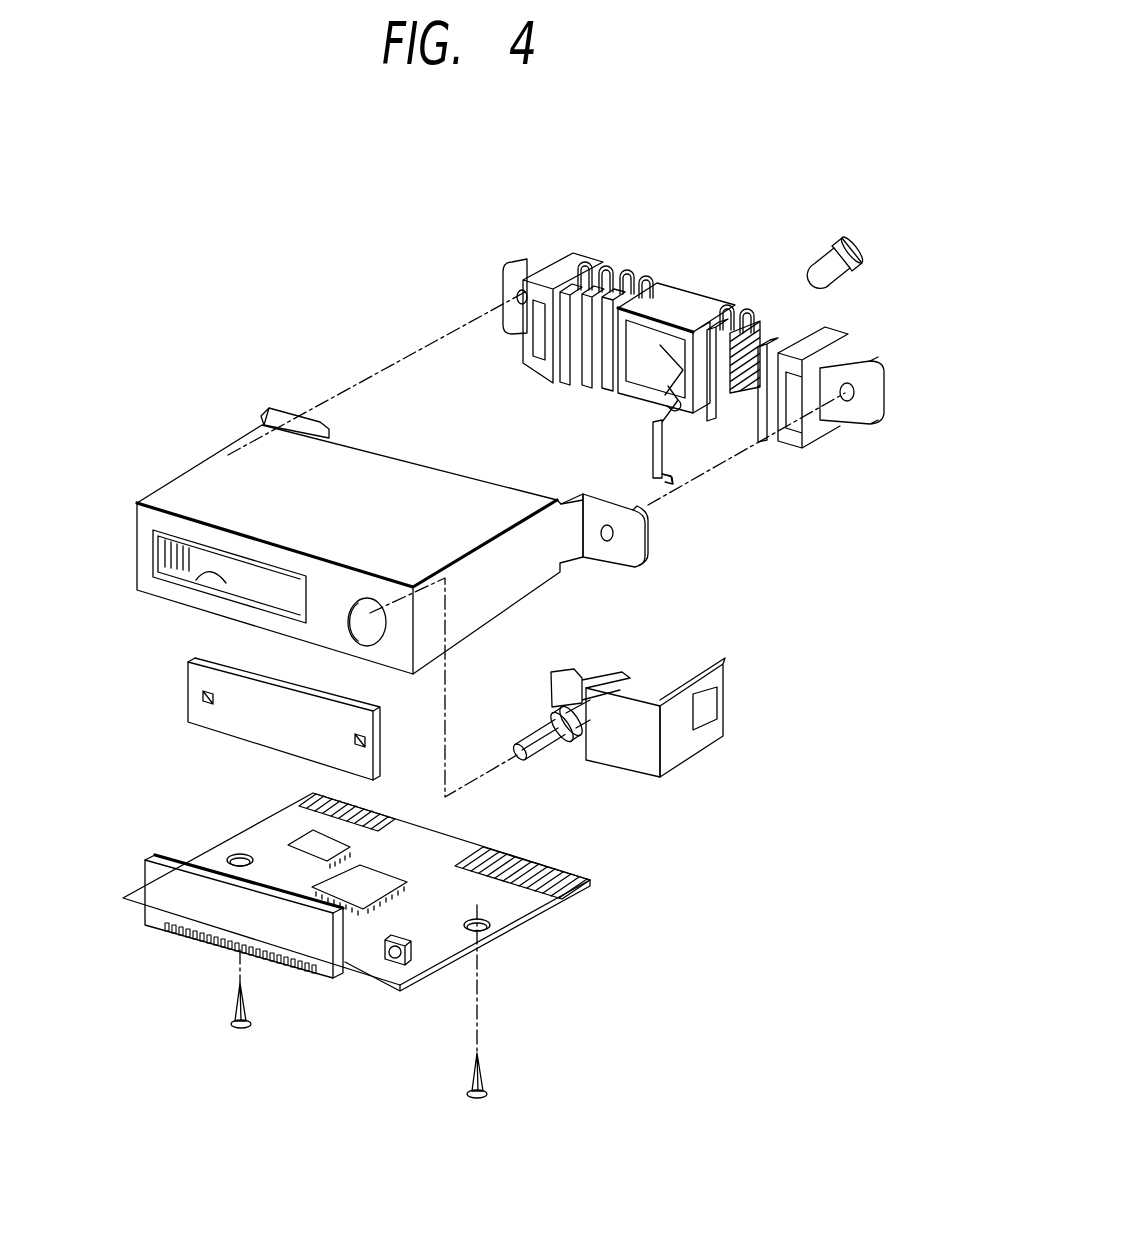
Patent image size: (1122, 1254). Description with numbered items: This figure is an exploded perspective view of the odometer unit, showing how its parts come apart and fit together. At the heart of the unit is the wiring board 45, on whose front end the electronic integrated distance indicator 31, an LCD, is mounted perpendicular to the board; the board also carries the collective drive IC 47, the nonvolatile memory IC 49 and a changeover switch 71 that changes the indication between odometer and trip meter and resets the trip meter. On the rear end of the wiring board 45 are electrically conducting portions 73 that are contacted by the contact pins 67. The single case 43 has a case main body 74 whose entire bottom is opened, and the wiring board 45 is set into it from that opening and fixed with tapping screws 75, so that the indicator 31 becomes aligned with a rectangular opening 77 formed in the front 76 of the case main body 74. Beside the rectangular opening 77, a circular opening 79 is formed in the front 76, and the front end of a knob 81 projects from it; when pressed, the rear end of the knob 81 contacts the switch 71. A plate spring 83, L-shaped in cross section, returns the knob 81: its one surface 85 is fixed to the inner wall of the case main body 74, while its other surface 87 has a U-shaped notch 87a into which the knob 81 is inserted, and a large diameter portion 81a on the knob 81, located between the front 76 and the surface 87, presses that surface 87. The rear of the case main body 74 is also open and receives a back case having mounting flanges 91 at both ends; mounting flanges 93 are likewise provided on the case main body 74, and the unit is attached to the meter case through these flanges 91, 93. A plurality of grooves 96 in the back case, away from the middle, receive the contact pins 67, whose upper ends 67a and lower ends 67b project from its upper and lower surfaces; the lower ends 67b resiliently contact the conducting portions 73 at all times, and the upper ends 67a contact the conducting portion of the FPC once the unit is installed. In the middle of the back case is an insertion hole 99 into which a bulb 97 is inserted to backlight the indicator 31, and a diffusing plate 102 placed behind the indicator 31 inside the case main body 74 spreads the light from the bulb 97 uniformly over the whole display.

The electronic integrated distance indicator 31 is at (148, 880).
The case 43 is at (218, 452).
The wiring board 45 is at (393, 975).
The collective drive IC 47 is at (383, 880).
The nonvolatile memory IC 49 is at (300, 840).
The contact pins 67 is at (600, 262).
The upper ends of the contact pins 67a is at (665, 400).
The lower ends of the contact pins 67b is at (673, 480).
The changeover switch 71 is at (410, 948).
The electrically conducting portions 73 is at (440, 823).
The case main body 74 is at (175, 490).
The tapping screws 75 is at (250, 1000).
The front of the case main body 76 is at (325, 630).
The rectangular opening 77 is at (215, 574).
The circular opening 79 is at (383, 645).
The knob 81 is at (548, 760).
The large diameter portion 81a is at (552, 720).
The plate spring 83 is at (717, 745).
The one surface of the plate spring 85 is at (740, 683).
The other surface of the plate spring 87 is at (635, 765).
The U-shaped notch 87a is at (590, 688).
The mounting flanges 91 is at (520, 262).
The mounting flanges 93 is at (284, 404).
The grooves 96 is at (562, 378).
The bulb 97 is at (862, 252).
The insertion hole 99 is at (632, 393).
The diffusing plate 102 is at (182, 700).